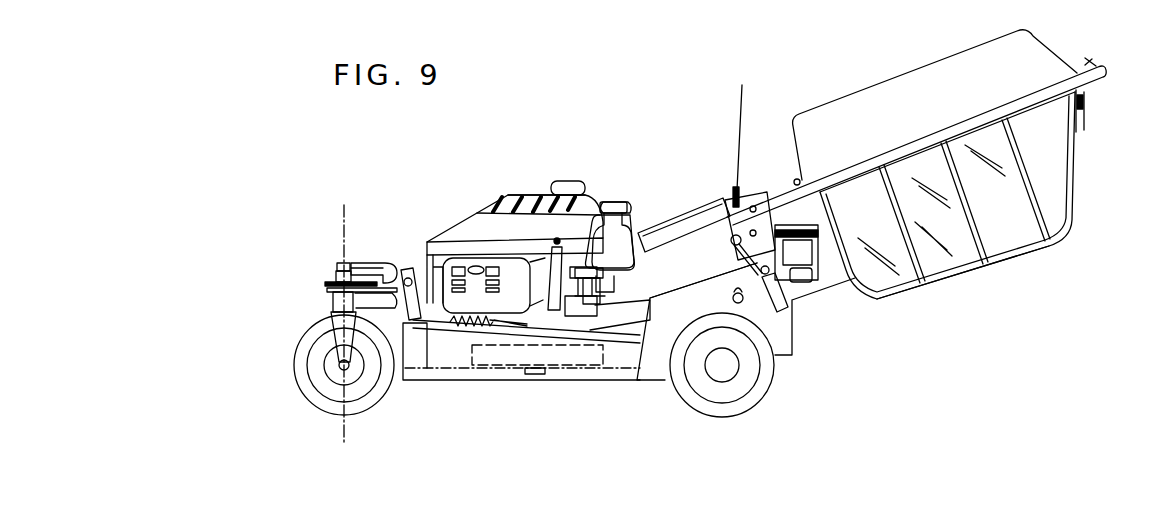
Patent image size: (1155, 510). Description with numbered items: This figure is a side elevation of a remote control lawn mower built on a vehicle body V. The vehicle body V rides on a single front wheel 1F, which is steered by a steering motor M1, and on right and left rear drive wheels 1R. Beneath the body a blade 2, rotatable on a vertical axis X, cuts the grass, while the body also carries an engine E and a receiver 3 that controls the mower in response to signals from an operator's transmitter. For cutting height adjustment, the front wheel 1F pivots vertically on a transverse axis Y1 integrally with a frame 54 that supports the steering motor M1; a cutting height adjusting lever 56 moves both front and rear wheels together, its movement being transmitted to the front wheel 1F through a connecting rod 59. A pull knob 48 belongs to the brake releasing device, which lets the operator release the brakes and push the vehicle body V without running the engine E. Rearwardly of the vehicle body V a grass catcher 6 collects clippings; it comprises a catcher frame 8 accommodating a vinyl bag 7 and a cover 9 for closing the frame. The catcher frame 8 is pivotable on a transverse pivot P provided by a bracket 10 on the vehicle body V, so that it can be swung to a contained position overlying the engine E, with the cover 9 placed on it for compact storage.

The front wheel 1F is at (297, 362).
The rear drive wheels 1R is at (762, 376).
The blade 2 is at (630, 382).
The receiver 3 is at (703, 205).
The grass catcher 6 is at (960, 281).
The vinyl bag 7 is at (1010, 235).
The catcher frame 8 is at (908, 292).
The cover 9 is at (912, 75).
The bracket 10 is at (790, 190).
The pull knob 48 is at (744, 302).
The frame 54 is at (333, 300).
The cutting height adjusting lever 56 is at (728, 244).
The connecting rod 59 is at (620, 330).
The engine E is at (505, 193).
The steering motor M1 is at (393, 262).
The transverse pivot P is at (757, 230).
The vehicle body V is at (440, 382).
The vertical axis X is at (538, 350).
The transverse axis Y1 is at (411, 268).